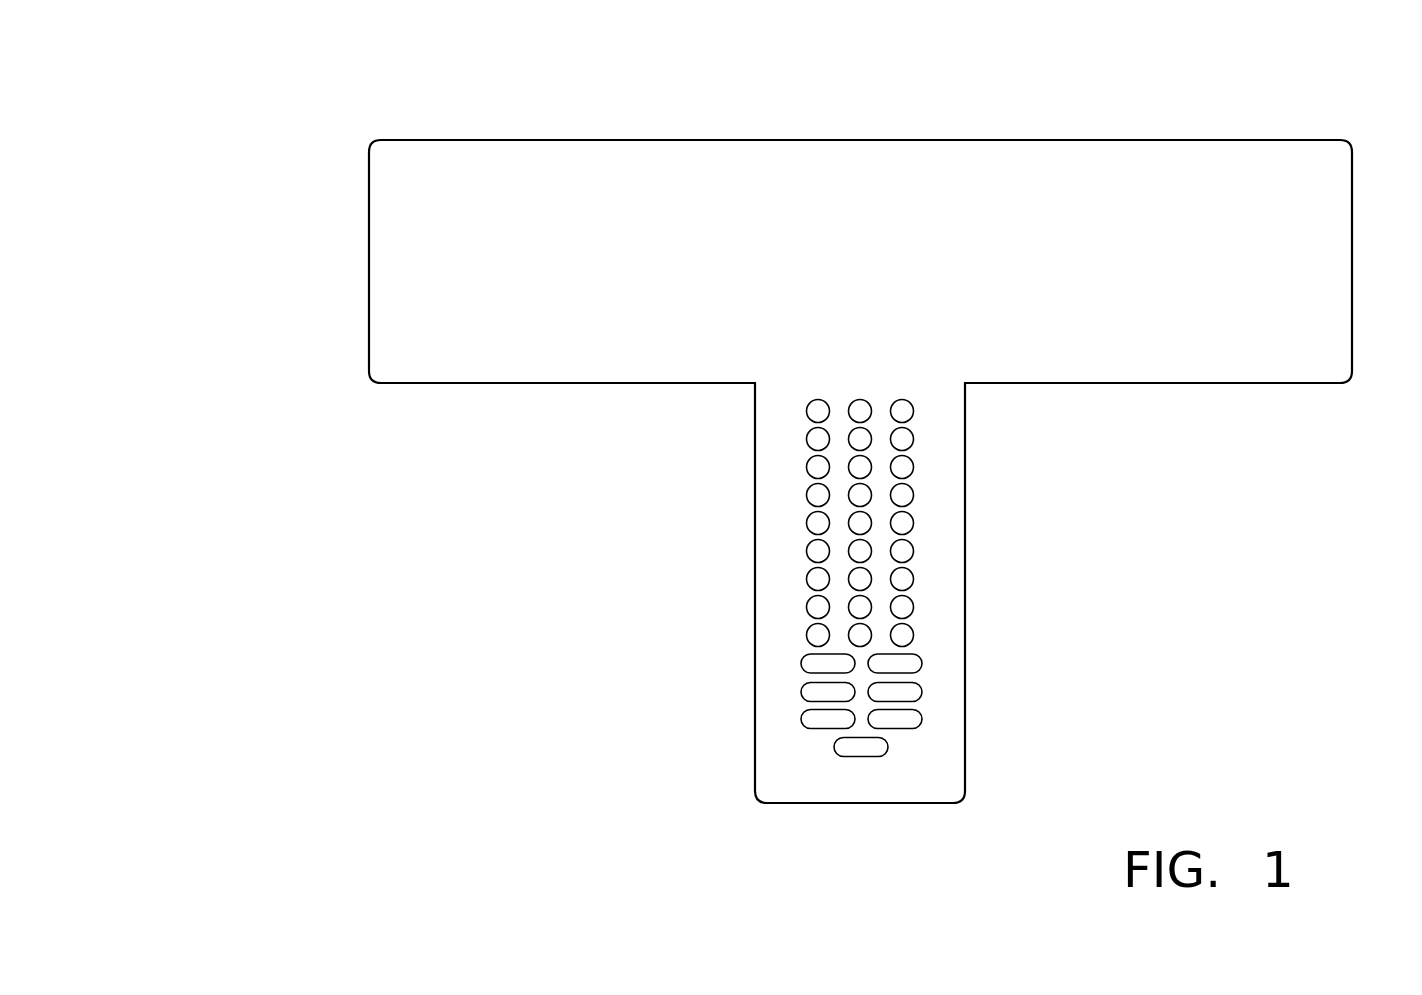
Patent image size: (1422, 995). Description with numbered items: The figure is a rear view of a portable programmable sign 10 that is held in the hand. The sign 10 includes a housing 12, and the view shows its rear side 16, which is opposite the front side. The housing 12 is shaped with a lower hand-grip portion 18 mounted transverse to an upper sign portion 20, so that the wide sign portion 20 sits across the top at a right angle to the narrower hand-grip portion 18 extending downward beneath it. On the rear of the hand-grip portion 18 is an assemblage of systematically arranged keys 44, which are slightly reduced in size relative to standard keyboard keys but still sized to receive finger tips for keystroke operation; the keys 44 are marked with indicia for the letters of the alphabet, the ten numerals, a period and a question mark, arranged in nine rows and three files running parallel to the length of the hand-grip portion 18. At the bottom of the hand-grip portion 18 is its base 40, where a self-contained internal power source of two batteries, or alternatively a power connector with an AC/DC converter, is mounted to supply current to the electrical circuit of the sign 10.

The portable programmable sign 10 is at (655, 108).
The housing 12 is at (255, 137).
The rear side 16 is at (1331, 339).
The hand-grip portion 18 is at (336, 383).
The sign portion 20 is at (338, 138).
The base 40 is at (872, 803).
The keys 44 is at (720, 400).